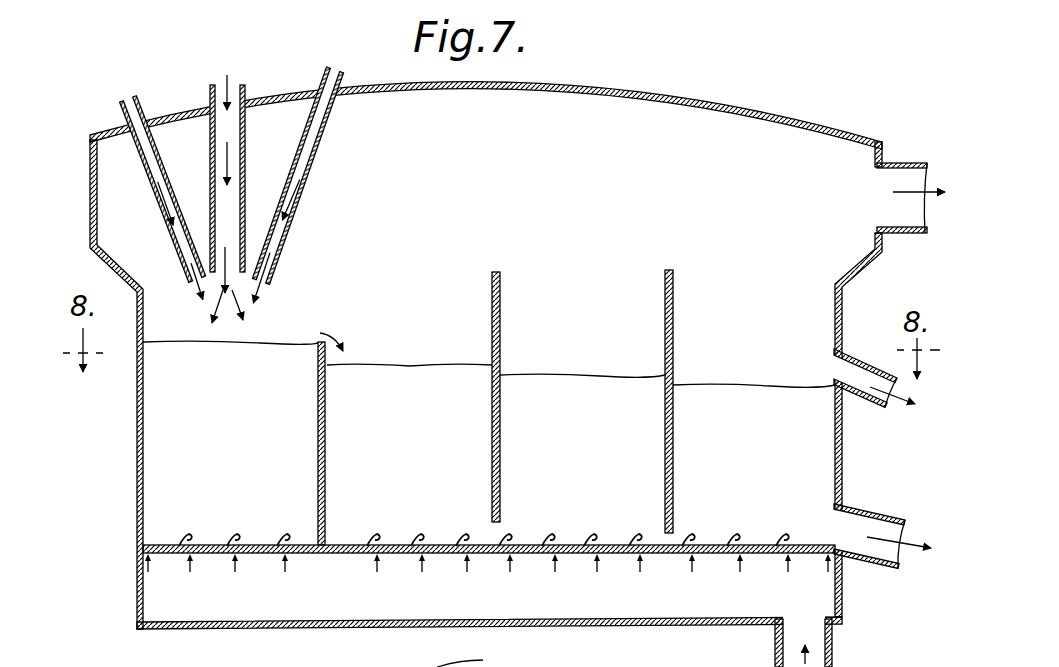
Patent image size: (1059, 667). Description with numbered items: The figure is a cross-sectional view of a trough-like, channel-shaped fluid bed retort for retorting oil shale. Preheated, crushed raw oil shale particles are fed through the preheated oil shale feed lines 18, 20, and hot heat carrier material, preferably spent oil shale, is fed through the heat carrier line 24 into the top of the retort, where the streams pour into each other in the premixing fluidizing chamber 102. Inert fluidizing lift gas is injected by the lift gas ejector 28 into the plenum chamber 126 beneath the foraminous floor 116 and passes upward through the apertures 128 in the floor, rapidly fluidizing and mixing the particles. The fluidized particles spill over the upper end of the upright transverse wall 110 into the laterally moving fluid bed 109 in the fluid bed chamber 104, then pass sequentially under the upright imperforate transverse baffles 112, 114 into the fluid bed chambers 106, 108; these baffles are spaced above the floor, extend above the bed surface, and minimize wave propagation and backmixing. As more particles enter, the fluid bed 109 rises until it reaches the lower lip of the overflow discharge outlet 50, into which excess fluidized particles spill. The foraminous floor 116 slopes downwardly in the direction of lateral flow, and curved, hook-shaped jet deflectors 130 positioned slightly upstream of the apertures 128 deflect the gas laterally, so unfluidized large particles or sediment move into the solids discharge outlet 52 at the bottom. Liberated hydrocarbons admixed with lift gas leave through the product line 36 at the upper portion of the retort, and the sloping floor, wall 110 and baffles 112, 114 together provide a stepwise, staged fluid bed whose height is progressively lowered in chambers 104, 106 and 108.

The preheated oil shale feed line 18 is at (122, 115).
The preheated oil shale feed line 20 is at (210, 97).
The heat carrier line 24 is at (322, 77).
The lift gas ejector 28 is at (775, 642).
The product line 36 is at (897, 163).
The overflow discharge outlet 50 is at (870, 363).
The solids discharge outlet 52 is at (867, 511).
The premixing fluidizing chamber 102 is at (258, 447).
The fluid bed chamber 104 is at (430, 459).
The fluid bed chamber 106 is at (600, 474).
The fluid bed chamber 108 is at (770, 489).
The laterally moving fluid bed 109 is at (407, 363).
The upright transverse wall 110 is at (326, 396).
The transverse baffle 112 is at (500, 302).
The transverse baffle 114 is at (673, 310).
The foraminous floor 116 is at (172, 540).
The plenum chamber 126 is at (478, 606).
The aperture 128 is at (375, 540).
The jet deflector 130 is at (237, 537).